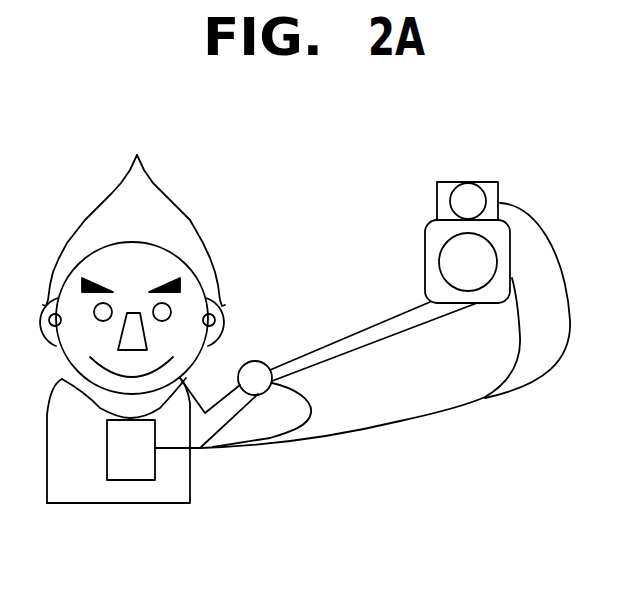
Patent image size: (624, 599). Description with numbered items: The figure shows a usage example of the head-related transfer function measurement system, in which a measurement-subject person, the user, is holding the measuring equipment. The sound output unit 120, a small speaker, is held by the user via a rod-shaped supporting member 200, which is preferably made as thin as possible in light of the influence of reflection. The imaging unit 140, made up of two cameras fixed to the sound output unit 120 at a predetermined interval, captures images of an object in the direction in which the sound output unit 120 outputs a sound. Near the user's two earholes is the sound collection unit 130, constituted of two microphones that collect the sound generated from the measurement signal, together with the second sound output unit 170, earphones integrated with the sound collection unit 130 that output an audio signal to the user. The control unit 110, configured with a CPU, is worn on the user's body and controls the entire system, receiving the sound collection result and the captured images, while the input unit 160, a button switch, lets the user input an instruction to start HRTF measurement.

The control unit 110 is at (133, 481).
The sound output unit 120 is at (426, 226).
The sound collection unit 130 is at (134, 215).
The imaging unit 140 is at (488, 182).
The input unit 160 is at (268, 361).
The second sound output unit 170 is at (132, 318).
The supporting member 200 is at (357, 335).